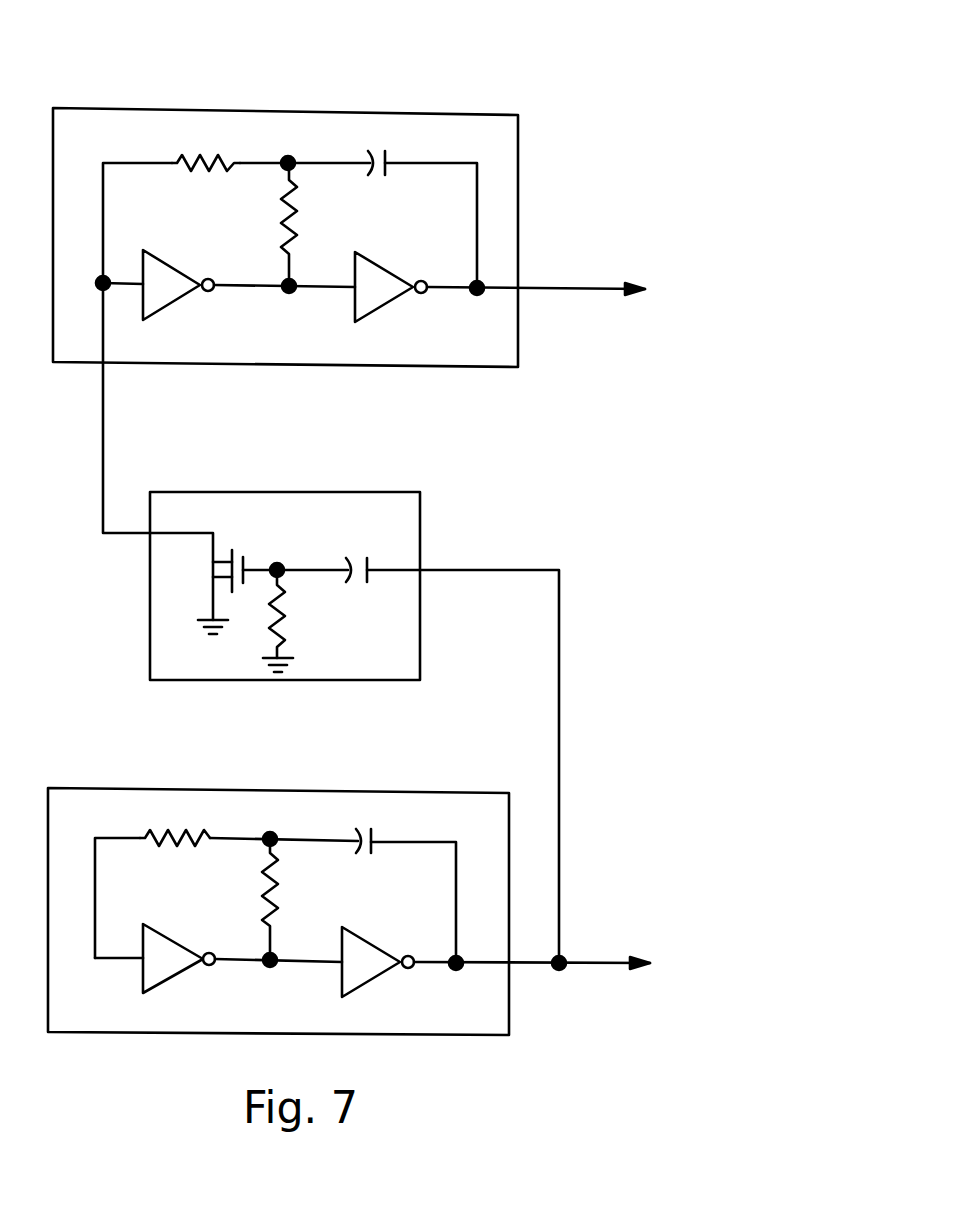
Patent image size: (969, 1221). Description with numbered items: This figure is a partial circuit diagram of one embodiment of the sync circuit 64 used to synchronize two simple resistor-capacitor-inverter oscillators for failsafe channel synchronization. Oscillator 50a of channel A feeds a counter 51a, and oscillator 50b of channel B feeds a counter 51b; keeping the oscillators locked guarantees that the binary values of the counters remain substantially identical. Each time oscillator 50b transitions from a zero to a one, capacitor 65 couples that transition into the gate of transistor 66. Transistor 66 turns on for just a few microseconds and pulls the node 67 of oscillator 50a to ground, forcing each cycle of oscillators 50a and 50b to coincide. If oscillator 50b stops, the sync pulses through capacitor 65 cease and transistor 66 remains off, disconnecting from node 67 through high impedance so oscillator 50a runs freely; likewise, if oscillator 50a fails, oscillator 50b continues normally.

The oscillator 50a is at (88, 105).
The oscillator 50b is at (88, 783).
The counter 51a is at (733, 306).
The counter 51b is at (738, 979).
The sync circuit 64 is at (331, 623).
The capacitor 65 is at (357, 590).
The transistor 66 is at (223, 540).
The node 67 is at (100, 282).